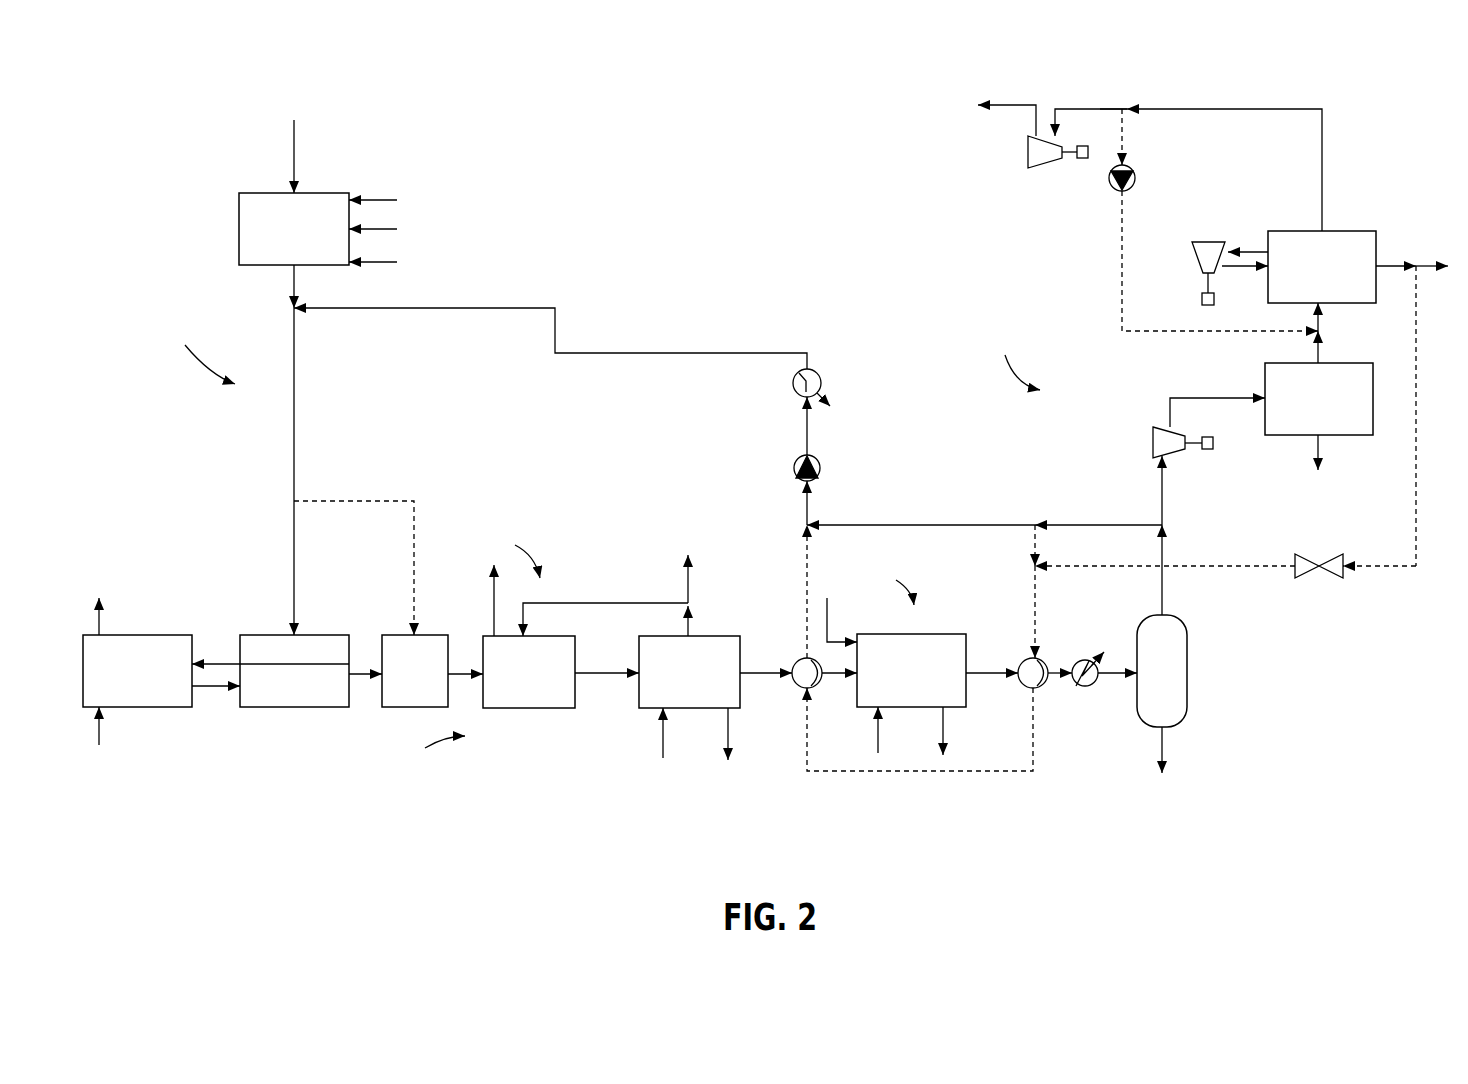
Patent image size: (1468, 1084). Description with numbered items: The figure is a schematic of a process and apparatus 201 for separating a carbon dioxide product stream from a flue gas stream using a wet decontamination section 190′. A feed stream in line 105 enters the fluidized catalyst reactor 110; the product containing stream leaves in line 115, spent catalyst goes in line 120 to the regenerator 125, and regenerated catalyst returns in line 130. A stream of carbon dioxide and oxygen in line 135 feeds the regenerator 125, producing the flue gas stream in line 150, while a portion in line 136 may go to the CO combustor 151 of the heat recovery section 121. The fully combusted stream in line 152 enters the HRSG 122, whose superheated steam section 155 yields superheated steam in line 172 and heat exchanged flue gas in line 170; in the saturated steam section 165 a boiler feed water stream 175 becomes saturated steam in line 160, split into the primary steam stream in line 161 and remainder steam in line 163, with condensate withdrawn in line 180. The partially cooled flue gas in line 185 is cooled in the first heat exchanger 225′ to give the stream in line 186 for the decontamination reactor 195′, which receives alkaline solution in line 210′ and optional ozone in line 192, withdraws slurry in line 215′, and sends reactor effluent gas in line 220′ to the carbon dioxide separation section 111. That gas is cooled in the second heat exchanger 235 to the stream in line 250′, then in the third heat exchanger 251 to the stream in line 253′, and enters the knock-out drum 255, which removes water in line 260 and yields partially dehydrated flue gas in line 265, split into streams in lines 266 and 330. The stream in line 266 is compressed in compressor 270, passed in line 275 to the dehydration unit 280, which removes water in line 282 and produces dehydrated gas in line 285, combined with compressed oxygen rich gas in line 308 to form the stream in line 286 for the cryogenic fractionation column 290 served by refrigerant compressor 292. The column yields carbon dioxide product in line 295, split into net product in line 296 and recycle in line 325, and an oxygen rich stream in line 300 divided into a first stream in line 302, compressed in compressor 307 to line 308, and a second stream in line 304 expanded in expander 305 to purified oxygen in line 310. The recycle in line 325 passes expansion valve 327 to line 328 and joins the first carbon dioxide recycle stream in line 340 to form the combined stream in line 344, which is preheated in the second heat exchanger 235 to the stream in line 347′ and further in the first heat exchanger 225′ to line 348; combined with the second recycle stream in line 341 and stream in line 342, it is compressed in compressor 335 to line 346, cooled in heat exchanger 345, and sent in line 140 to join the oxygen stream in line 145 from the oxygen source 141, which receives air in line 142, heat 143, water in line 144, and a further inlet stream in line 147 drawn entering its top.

The feed stream line 105 is at (99, 732).
The fluidized catalyst reactor 110 is at (147, 635).
The carbon dioxide separation section 111 is at (1016, 361).
The product containing stream line 115 is at (99, 622).
The spent catalyst stream line 120 is at (202, 686).
The heat recovery section 121 is at (512, 556).
The heat recovery steam generator 122 is at (435, 739).
The regenerator 125 is at (293, 707).
The regenerated catalyst stream line 130 is at (210, 664).
The stream of carbon dioxide and oxygen line 135 is at (294, 478).
The carbon dioxide and oxygen portion line 136 is at (414, 568).
The heat exchanged carbon dioxide recycle stream line 140 is at (555, 353).
The oxygen source 141 is at (239, 234).
The air stream line 142 is at (373, 200).
The heat 143 is at (390, 229).
The water stream line 144 is at (388, 262).
The oxygen stream line 145 is at (291, 292).
The spent catalyst stream 147 is at (294, 152).
The flue gas stream line 150 is at (363, 674).
The CO combustor 151 is at (382, 638).
The fully combusted stream line 152 is at (455, 674).
The superheated steam section 155 is at (538, 708).
The saturated steam stream line 160 is at (688, 628).
The primary steam stream line 161 is at (570, 603).
The remainder steam stream line 163 is at (688, 588).
The saturated steam section 165 is at (639, 652).
The heat exchanged flue gas stream line 170 is at (605, 673).
The superheated steam stream line 172 is at (494, 618).
The boiler feed water stream 175 is at (663, 742).
The condensate stream line 180 is at (728, 732).
The partially cooled flue gas stream line 185 is at (765, 673).
The heat exchanged cooled flue gas stream line 186 is at (837, 687).
The decontamination section 190′ is at (893, 586).
The ozone stream line 192 is at (827, 612).
The decontamination reactor 195′ is at (895, 634).
The process and apparatus 201 is at (190, 354).
The alkaline solution stream line 210′ is at (878, 751).
The liquid slurry stream line 215′ is at (943, 742).
The reactor effluent gas stream line 220′ is at (983, 673).
The first heat exchanger 225′ is at (797, 663).
The second heat exchanger 235 is at (1047, 663).
The second cooled flue gas stream line 250′ is at (1058, 680).
The third heat exchanger 251 is at (1088, 660).
The ultimately cooled flue gas stream line 253′ is at (1108, 673).
The knock-out drum 255 is at (1187, 650).
The water stream line 260 is at (1162, 747).
The partially dehydrated flue gas stream line 265 is at (1162, 596).
The first partially dehydrated flue gas stream line 266 is at (1162, 522).
The compressor 270 is at (1178, 436).
The compressed flue gas stream line 275 is at (1208, 398).
The dehydration unit 280 is at (1272, 435).
The water stream line 282 is at (1318, 452).
The dehydrated flue gas stream line 285 is at (1318, 355).
The combined dehydrated flue gas stream line 286 is at (1318, 327).
The cryogenic fractionation column 290 is at (1358, 231).
The compressor 292 is at (1192, 258).
The carbon dioxide product stream line 295 is at (1384, 266).
The net carbon dioxide product stream line 296 is at (1426, 266).
The oxygen rich stream line 300 is at (1322, 204).
The first oxygen rich stream line 302 is at (1122, 142).
The second oxygen rich stream line 304 is at (1100, 109).
The expander 305 is at (1028, 158).
The compressor 307 is at (1135, 178).
The compressed oxygen rich stream line 308 is at (1122, 331).
The purified oxygen stream line 310 is at (1006, 105).
The recycle carbon dioxide product stream line 325 is at (1416, 545).
The expansion valve 327 is at (1300, 554).
The expanded recycle carbon dioxide product stream line 328 is at (1233, 566).
The second partially dehydrated flue gas stream line 330 is at (1098, 525).
The compressor 335 is at (794, 471).
The first carbon dioxide recycle stream line 340 is at (1035, 546).
The second carbon dioxide recycle stream line 341 is at (884, 525).
The combined carbon dioxide recycle stream line 342 is at (807, 516).
The combined carbon dioxide recycle stream line 344 is at (1035, 605).
The heat exchanger 345 is at (794, 386).
The compressed carbon dioxide recycle stream line 346 is at (807, 434).
The first partially preheated carbon dioxide recycle stream line 347′ is at (1035, 752).
The first preheated carbon dioxide recycle stream line 348 is at (807, 555).